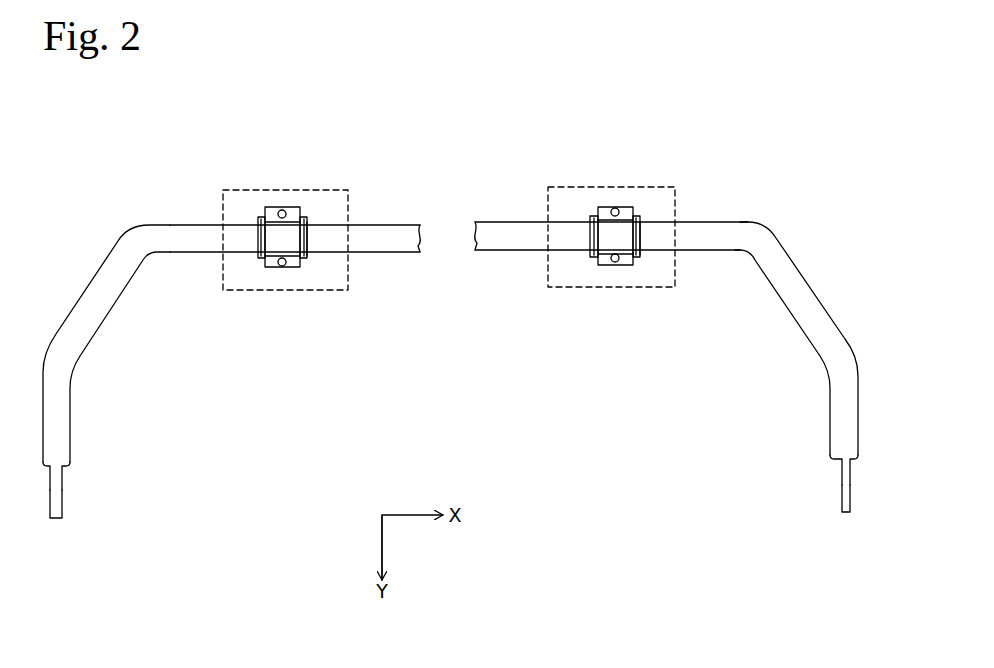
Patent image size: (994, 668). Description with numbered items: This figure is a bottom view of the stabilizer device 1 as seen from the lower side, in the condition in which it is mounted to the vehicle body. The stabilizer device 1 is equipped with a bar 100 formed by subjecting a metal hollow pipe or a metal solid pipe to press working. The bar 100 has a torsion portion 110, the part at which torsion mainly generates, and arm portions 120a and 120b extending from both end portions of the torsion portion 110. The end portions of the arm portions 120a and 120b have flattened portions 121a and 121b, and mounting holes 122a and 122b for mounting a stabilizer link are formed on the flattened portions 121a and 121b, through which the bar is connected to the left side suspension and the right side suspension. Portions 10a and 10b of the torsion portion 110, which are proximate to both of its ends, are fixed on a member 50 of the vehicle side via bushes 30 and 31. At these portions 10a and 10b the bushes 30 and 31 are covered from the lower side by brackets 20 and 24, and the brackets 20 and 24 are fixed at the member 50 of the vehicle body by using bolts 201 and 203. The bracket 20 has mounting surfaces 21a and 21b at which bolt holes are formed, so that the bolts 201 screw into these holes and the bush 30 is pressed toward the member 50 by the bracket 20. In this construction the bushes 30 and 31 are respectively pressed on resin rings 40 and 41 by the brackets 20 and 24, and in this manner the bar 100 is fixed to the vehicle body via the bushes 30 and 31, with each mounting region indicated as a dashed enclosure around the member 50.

The stabilizer device 1 is at (434, 182).
The bar 100 is at (493, 221).
The torsion portion 110 is at (375, 237).
The arm portion 120a is at (93, 343).
The arm portion 120b is at (790, 298).
The flattened portion 121a is at (62, 474).
The flattened portion 121b is at (840, 471).
The mounting hole 122a is at (62, 502).
The mounting hole 122b is at (840, 494).
The portion 10a is at (282, 275).
The portion 10b is at (608, 273).
The bracket 20 is at (276, 241).
The mounting surface 21a is at (290, 262).
The mounting surface 21b is at (292, 214).
The bracket 24 is at (608, 240).
The bolt 201 is at (281, 210).
The bolt 203 is at (614, 207).
The bush 30 is at (308, 262).
The bush 31 is at (634, 259).
The resin ring 40 is at (306, 220).
The resin ring 41 is at (639, 217).
The member 50 is at (349, 291).